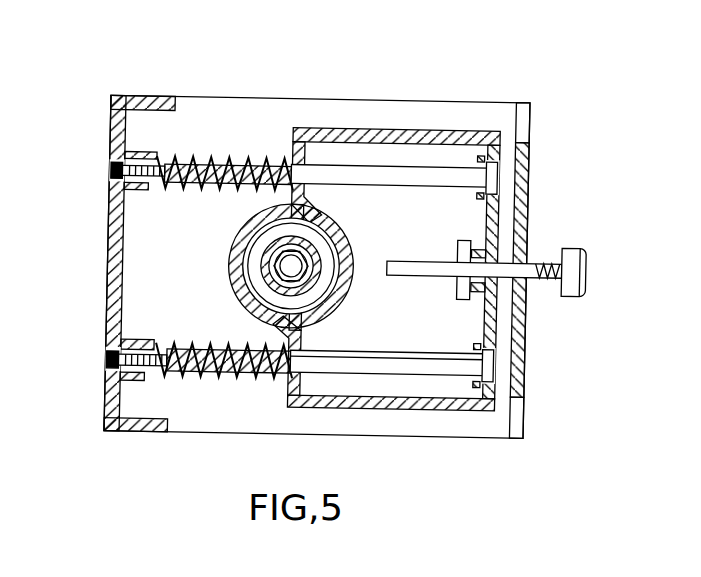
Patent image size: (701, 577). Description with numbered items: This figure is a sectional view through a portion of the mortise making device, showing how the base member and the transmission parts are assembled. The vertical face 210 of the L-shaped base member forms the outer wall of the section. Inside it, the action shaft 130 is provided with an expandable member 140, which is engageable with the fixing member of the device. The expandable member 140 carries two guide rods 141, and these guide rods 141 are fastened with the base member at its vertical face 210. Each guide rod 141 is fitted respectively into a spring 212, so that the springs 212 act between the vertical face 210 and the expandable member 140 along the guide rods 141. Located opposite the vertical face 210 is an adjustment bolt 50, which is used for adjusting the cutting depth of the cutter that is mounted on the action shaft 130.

The vertical face 210 is at (284, 256).
The spring 212 is at (200, 207).
The guide rod 141 is at (369, 212).
The action shaft 130 is at (290, 186).
The expandable member 140 is at (385, 227).
The adjustment bolt 50 is at (489, 238).